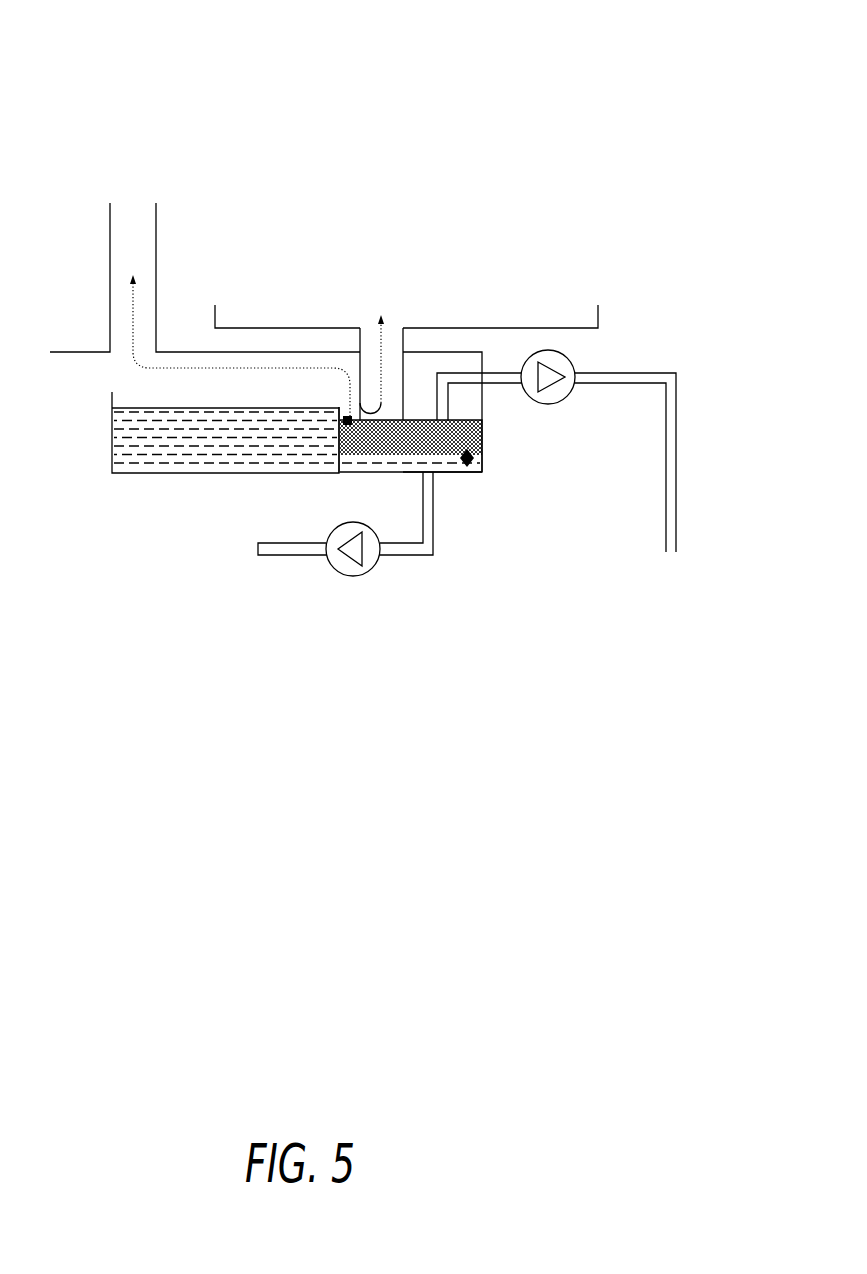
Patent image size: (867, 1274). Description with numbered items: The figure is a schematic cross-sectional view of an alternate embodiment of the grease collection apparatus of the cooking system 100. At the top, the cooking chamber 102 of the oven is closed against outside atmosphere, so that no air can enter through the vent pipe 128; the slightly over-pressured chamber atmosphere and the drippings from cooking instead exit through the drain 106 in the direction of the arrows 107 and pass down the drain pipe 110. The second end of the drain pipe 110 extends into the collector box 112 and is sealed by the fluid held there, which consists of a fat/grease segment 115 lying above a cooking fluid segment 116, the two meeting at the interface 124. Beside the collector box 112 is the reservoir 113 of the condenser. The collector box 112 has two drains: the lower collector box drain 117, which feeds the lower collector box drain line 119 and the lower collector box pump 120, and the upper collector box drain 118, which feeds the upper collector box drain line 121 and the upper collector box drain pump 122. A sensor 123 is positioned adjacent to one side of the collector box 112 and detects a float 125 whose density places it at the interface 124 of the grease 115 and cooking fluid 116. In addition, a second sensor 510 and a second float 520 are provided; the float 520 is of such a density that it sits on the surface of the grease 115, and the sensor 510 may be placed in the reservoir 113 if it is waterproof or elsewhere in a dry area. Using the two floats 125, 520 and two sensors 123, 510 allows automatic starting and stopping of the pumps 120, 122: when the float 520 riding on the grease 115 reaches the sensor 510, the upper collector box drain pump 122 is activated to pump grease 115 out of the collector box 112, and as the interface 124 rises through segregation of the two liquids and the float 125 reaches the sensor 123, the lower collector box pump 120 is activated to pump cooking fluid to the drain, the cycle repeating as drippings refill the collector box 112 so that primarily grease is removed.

The cooking system 100 is at (243, 138).
The cooking chamber 102 is at (389, 184).
The drain 106 is at (392, 340).
The arrows 107 is at (379, 348).
The drain pipe 110 is at (405, 342).
The collector box 112 is at (460, 473).
The reservoir 113 is at (118, 474).
The fat/grease segment 115 is at (340, 473).
The cooking fluid segment 116 is at (385, 465).
The lower collector box drain 117 is at (418, 473).
The upper collector box drain 118 is at (483, 385).
The lower collector box drain line 119 is at (407, 555).
The lower collector box pump 120 is at (334, 567).
The upper collector box drain line 121 is at (645, 372).
The upper collector box drain pump 122 is at (571, 390).
The sensor 123 is at (483, 433).
The interface 124 is at (417, 418).
The float 125 is at (474, 458).
The vent pipe 128 is at (120, 238).
The second sensor 510 is at (337, 417).
The second float 520 is at (346, 417).